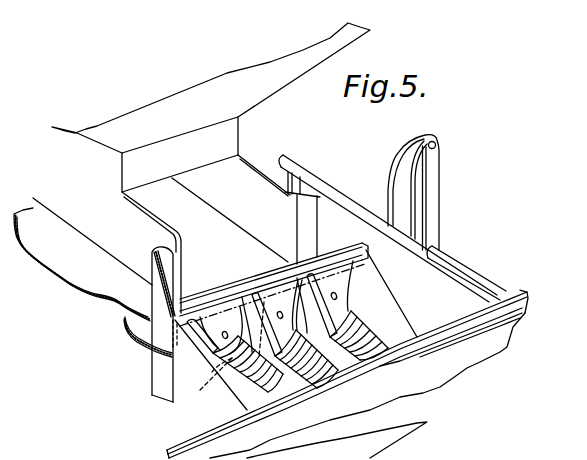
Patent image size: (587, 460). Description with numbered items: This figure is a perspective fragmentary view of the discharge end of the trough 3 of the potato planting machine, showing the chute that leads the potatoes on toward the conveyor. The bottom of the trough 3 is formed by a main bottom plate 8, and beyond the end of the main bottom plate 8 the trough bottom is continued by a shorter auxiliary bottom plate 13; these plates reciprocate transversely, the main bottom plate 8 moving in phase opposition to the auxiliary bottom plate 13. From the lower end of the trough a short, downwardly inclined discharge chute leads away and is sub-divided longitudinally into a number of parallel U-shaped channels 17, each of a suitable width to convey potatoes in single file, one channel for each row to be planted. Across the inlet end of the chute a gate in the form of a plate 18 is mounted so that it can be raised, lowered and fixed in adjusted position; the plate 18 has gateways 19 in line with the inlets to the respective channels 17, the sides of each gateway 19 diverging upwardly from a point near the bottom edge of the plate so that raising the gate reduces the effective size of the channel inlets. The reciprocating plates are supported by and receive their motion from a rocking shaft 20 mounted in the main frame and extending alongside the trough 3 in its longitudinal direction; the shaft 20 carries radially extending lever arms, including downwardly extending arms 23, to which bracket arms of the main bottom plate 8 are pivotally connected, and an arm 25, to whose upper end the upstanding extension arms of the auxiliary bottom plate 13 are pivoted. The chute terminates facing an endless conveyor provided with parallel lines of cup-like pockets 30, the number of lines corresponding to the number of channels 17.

The trough 3 is at (201, 154).
The main bottom plate 8 is at (105, 302).
The auxiliary bottom plate 13 is at (148, 347).
The channels 17 is at (393, 285).
The plate 18 is at (170, 396).
The gateways 19 is at (200, 390).
The rocking shaft 20 is at (454, 262).
The lever arms 23 is at (308, 188).
The lever arm 25 is at (438, 197).
The pockets 30 is at (499, 307).